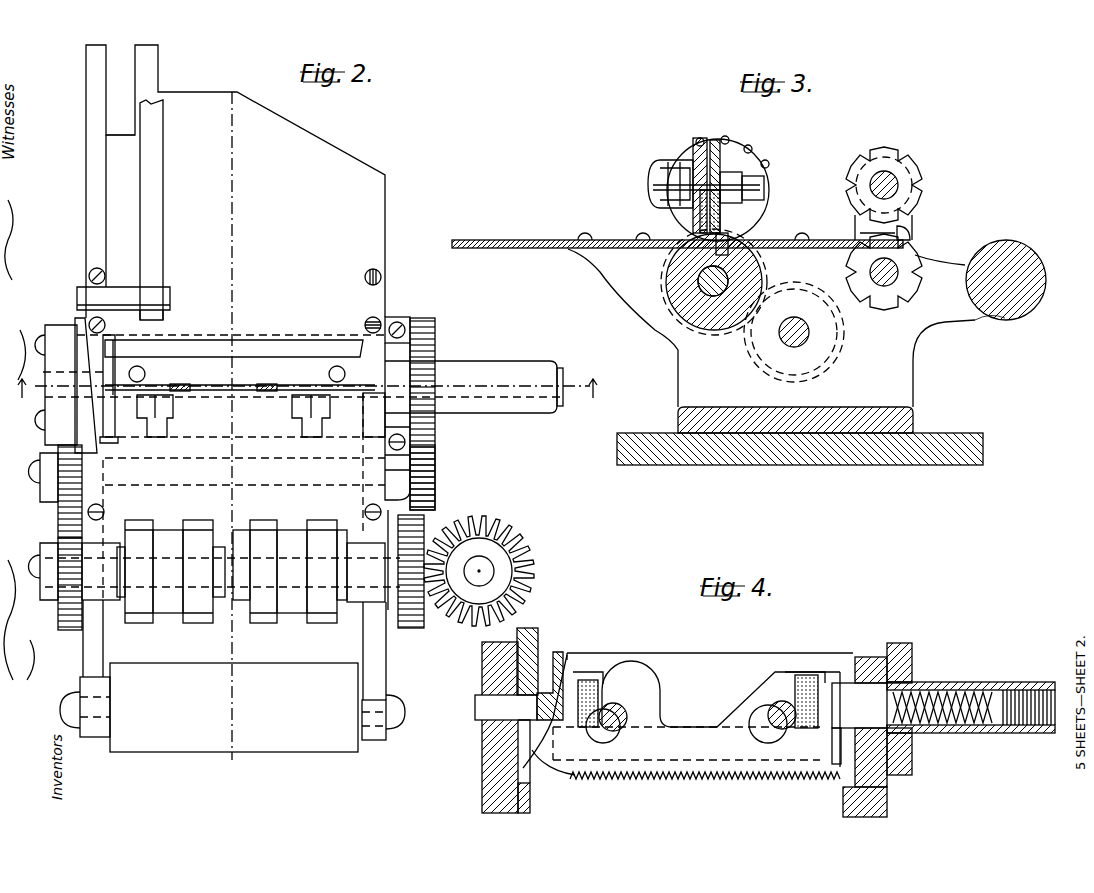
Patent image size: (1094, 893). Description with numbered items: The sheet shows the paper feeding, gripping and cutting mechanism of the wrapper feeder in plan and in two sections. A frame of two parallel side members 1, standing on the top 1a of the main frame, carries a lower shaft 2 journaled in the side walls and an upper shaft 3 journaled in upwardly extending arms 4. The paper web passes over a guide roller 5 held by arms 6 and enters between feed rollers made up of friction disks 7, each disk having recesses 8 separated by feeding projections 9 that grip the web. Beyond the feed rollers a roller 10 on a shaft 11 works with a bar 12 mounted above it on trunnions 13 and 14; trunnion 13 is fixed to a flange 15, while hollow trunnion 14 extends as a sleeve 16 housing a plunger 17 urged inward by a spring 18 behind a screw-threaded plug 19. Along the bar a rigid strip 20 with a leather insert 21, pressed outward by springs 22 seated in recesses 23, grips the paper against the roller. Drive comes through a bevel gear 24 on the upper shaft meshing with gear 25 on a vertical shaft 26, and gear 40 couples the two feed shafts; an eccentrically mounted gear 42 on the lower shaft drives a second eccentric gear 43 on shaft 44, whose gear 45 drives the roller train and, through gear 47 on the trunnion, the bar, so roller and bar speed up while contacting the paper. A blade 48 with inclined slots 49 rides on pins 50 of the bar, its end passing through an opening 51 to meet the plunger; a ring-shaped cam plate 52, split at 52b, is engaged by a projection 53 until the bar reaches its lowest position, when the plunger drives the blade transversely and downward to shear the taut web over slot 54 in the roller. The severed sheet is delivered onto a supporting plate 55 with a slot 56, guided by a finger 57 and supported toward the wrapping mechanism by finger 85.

In FIG. 3, the side member 1 is at (700, 382).
In FIG. 4, the side member 1 is at (505, 668).
In FIG. 3, the top of the main frame 1a is at (800, 463).
In FIG. 3, the lower shaft 2 is at (900, 280).
In FIG. 2, the upper shaft 3 is at (231, 422).
In FIG. 3, the upper shaft 3 is at (900, 191).
In FIG. 2, the upwardly extending arms 4 is at (402, 665).
In FIG. 3, the upwardly extending arms 4 is at (908, 231).
In FIG. 2, the guide roller 5 is at (185, 745).
In FIG. 3, the guide roller 5 is at (1047, 286).
In FIG. 2, the arms 6 is at (97, 740).
In FIG. 3, the arms 6 is at (970, 325).
In FIG. 2, the friction disks 7 is at (188, 612).
In FIG. 3, the friction disks 7 is at (916, 171).
In FIG. 2, the recesses 8 is at (145, 548).
In FIG. 3, the recesses 8 is at (906, 158).
In FIG. 2, the feeding projections 9 is at (147, 572).
In FIG. 3, the feeding projections 9 is at (845, 214).
In FIG. 3, the roller 10 is at (710, 337).
In FIG. 3, the shaft 11 is at (700, 285).
In FIG. 2, the bar 12 is at (258, 355).
In FIG. 3, the bar 12 is at (693, 143).
In FIG. 4, the bar 12 is at (712, 676).
In FIG. 2, the trunnion 13 is at (44, 395).
In FIG. 4, the trunnion 13 is at (480, 713).
In FIG. 4, the trunnion 14 is at (892, 735).
In FIG. 2, the disk or flange 15 is at (106, 413).
In FIG. 4, the disk or flange 15 is at (565, 653).
In FIG. 2, the sleeve 16 is at (485, 397).
In FIG. 4, the sleeve 16 is at (952, 690).
In FIG. 4, the plunger 17 is at (859, 705).
In FIG. 4, the spring 18 is at (982, 734).
In FIG. 2, the screw-threaded plug 19 is at (558, 400).
In FIG. 4, the screw-threaded plug 19 is at (1053, 735).
In FIG. 3, the strip of rigid material 20 is at (700, 200).
In FIG. 4, the strip of rigid material 20 is at (681, 764).
In FIG. 3, the piece of leather 21 is at (695, 217).
In FIG. 3, the springs 22 is at (665, 187).
In FIG. 4, the springs 22 is at (590, 700).
In FIG. 2, the recesses 23 is at (146, 374).
In FIG. 3, the recesses 23 is at (690, 166).
In FIG. 4, the recesses 23 is at (590, 688).
In FIG. 2, the bevel gear 24 is at (428, 628).
In FIG. 2, the gear 25 is at (498, 558).
In FIG. 2, the shaft 26 is at (486, 561).
In FIG. 2, the gear 40 is at (410, 628).
In FIG. 2, the eccentrically mounted gear 42 is at (70, 598).
In FIG. 2, the eccentrically mounted gear 43 is at (65, 489).
In FIG. 2, the shaft 44 is at (258, 468).
In FIG. 3, the shaft 44 is at (808, 338).
In FIG. 2, the gear 45 is at (435, 491).
In FIG. 2, the gear 47 is at (430, 333).
In FIG. 3, the gear 47 is at (741, 146).
In FIG. 4, the gear 47 is at (915, 662).
In FIG. 2, the blade 48 is at (218, 391).
In FIG. 4, the blade 48 is at (652, 714).
In FIG. 4, the inclined slots 49 is at (603, 743).
In FIG. 2, the pins or bolts 50 is at (160, 435).
In FIG. 3, the pins or bolts 50 is at (750, 186).
In FIG. 4, the pins or bolts 50 is at (623, 727).
In FIG. 2, the opening 51 is at (365, 390).
In FIG. 4, the opening 51 is at (849, 735).
In FIG. 4, the cam plate 52 is at (527, 650).
In FIG. 4, the radial split 52b is at (522, 758).
In FIG. 2, the projection 53 is at (100, 392).
In FIG. 4, the projection 53 is at (543, 772).
In FIG. 2, the slot 54 is at (253, 390).
In FIG. 3, the slot 54 is at (760, 250).
In FIG. 2, the supporting plate 55 is at (370, 220).
In FIG. 3, the supporting plate 55 is at (538, 249).
In FIG. 2, the slot 56 is at (123, 83).
In FIG. 2, the finger 57 is at (152, 174).
In FIG. 2, the supporting finger 85 is at (143, 56).